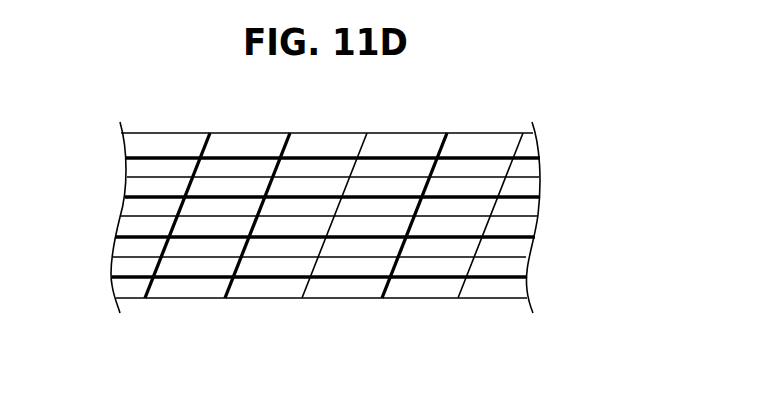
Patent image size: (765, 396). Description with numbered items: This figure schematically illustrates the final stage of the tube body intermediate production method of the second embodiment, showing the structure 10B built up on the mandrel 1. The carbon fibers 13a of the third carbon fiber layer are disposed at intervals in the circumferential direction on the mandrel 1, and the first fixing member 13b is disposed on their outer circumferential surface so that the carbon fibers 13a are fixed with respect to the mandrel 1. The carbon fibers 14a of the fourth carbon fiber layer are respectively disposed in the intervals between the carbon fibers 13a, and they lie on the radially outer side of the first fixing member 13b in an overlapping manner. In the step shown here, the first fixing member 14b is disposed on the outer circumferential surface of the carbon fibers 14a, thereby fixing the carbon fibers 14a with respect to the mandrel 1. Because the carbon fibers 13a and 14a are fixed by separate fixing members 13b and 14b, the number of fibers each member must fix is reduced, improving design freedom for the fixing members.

The layered structure 10B is at (640, 108).
The mandrel 1 is at (498, 147).
The carbon fibers of the fourth carbon fiber layer 14a is at (157, 158).
The carbon fibers of the third carbon fiber layer 13a is at (522, 176).
The first fixing member 13b is at (198, 160).
The first fixing member 14b is at (233, 270).